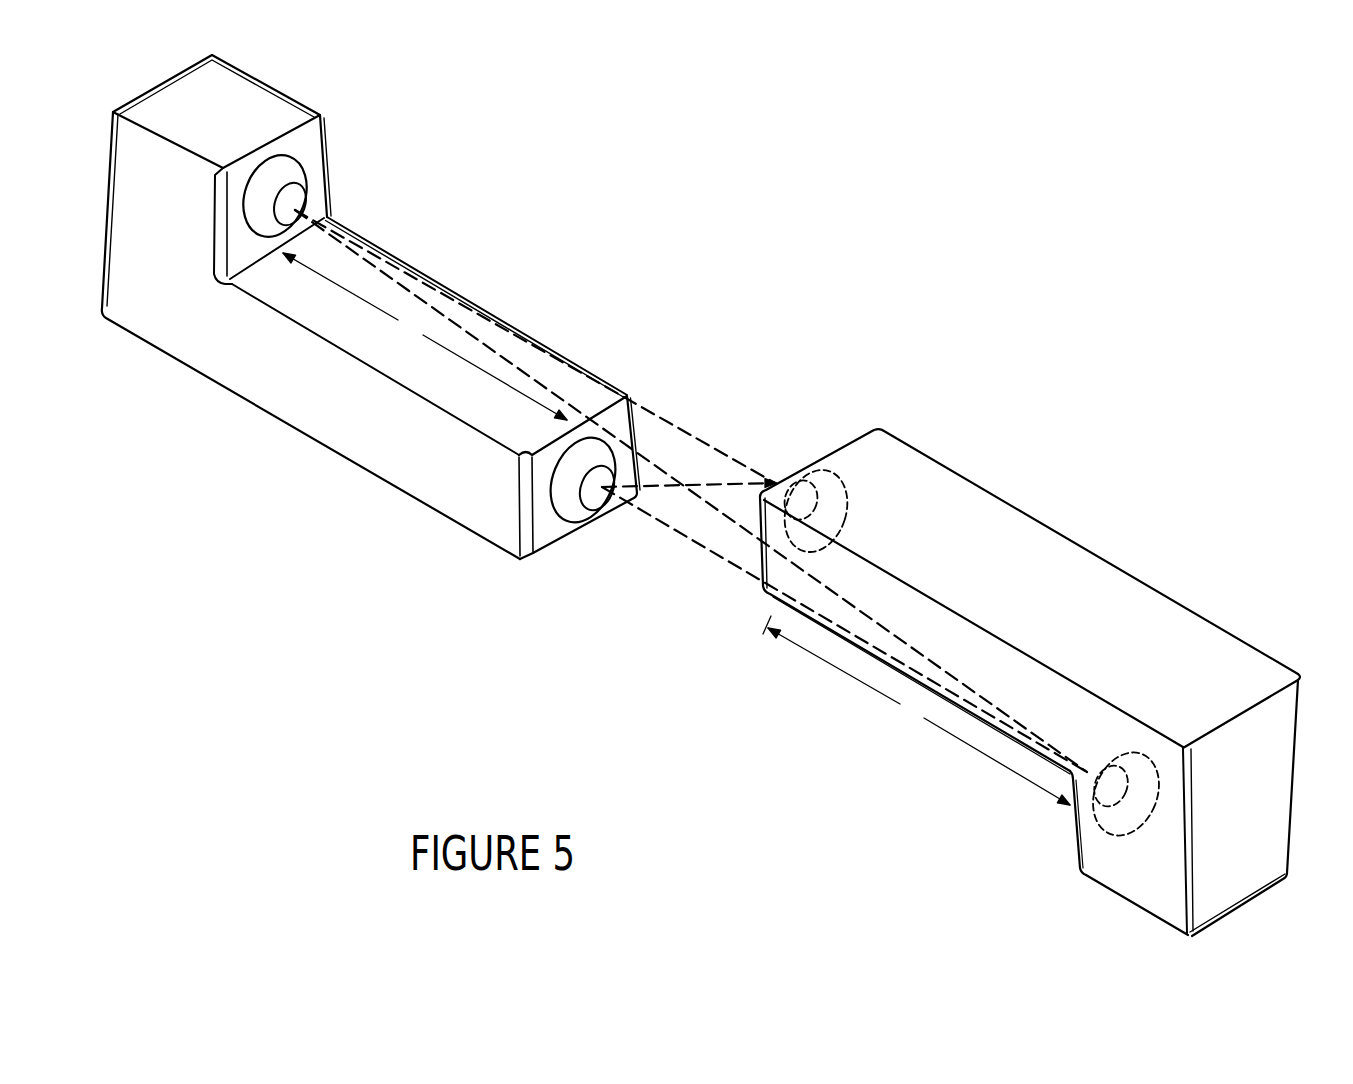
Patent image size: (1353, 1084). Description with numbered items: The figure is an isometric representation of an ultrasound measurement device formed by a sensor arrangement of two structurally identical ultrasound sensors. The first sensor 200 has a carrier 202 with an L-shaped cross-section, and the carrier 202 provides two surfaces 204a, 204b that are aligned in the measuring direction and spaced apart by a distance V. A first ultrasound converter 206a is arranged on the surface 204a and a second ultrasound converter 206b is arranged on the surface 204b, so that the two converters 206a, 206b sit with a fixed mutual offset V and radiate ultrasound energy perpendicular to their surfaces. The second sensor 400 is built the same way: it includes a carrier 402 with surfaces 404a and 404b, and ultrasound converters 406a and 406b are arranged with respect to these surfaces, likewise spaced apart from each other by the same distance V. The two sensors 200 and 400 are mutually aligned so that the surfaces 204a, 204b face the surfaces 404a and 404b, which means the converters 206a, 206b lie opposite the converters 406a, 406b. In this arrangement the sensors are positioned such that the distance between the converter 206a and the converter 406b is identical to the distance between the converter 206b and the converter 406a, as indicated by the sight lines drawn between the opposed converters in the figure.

The ultrasound sensor 200 is at (377, 342).
The carrier 202 is at (157, 328).
The surface 204a is at (309, 148).
The surface 204b is at (547, 532).
The first ultrasound converter 206a is at (293, 173).
The second ultrasound converter 206b is at (598, 496).
The second sensor 400 is at (989, 663).
The carrier 402 is at (1093, 576).
The surface 404a is at (1074, 858).
The surface 404b is at (760, 560).
The ultrasound converter 406a is at (1112, 816).
The ultrasound converter 406b is at (829, 490).